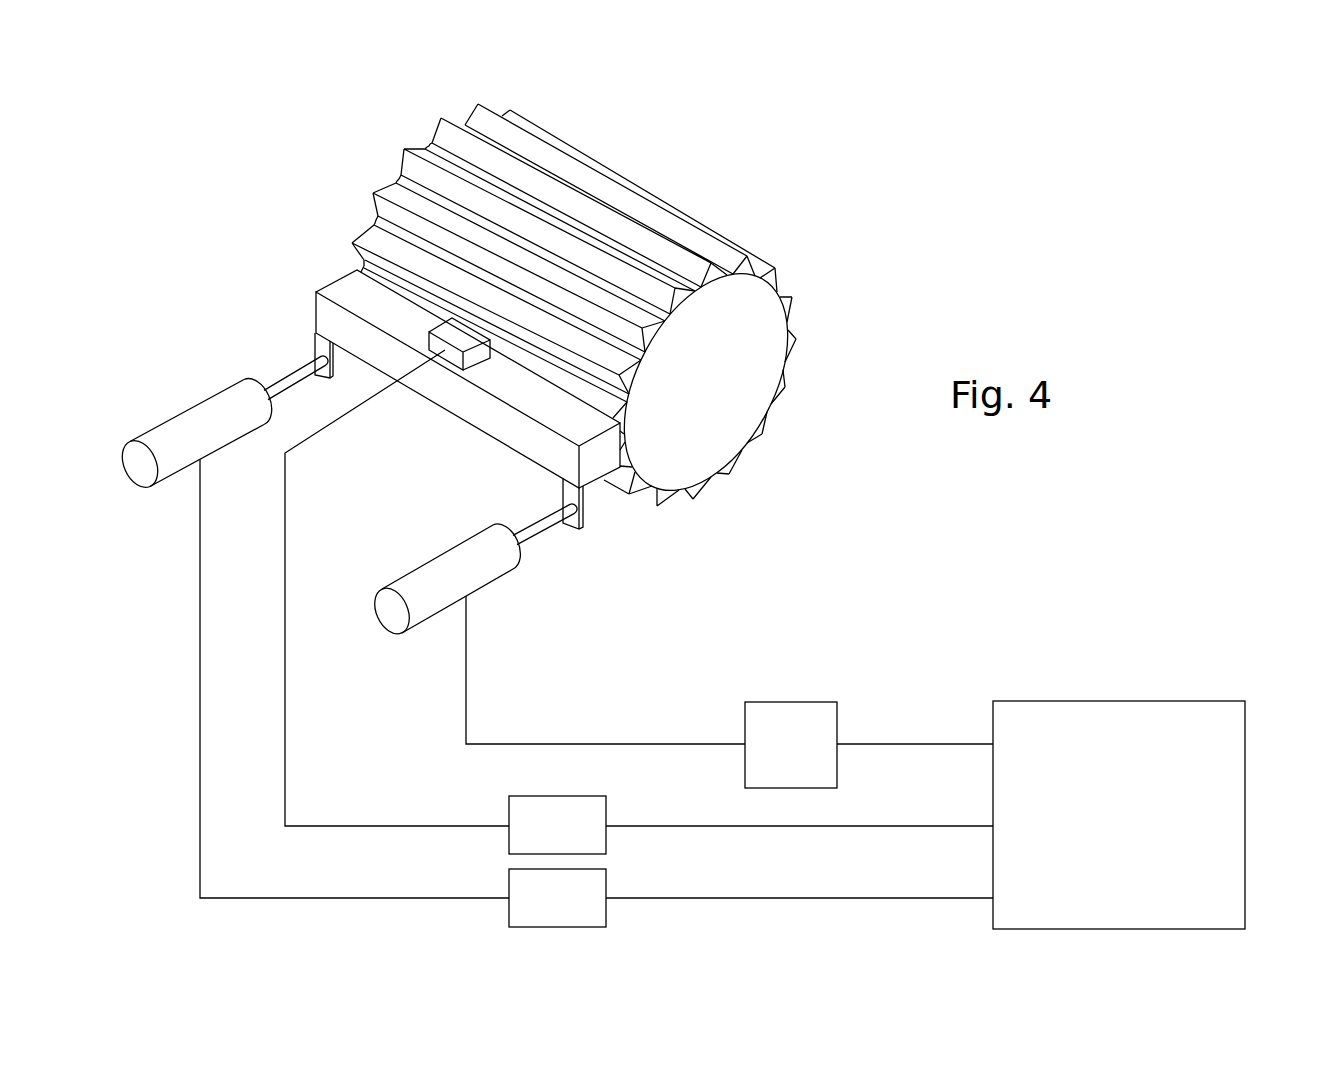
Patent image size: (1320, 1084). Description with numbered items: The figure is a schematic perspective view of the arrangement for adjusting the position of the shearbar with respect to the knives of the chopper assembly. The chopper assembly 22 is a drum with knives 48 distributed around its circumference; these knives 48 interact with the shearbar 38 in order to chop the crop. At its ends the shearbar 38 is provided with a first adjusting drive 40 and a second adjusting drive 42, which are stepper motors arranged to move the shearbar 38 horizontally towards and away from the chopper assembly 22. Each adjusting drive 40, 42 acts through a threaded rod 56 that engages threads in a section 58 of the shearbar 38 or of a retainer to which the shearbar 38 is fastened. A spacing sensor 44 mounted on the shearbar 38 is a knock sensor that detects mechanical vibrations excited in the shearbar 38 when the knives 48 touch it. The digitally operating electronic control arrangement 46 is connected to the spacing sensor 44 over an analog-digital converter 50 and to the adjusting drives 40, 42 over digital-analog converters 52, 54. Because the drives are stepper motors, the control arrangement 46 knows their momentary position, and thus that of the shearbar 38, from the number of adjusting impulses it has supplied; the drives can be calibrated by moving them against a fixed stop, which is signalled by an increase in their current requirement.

The chopper assembly 22 is at (430, 148).
The shearbar 38 is at (348, 286).
The first adjusting drive 40 is at (150, 432).
The second adjusting drive 42 is at (372, 608).
The spacing sensor 44 is at (458, 357).
The electronic control arrangement 46 is at (1078, 700).
The knives 48 is at (722, 252).
The analog-digital converter 50 is at (557, 795).
The digital-analog converter 52 is at (837, 720).
The digital-analog converter 54 is at (606, 889).
The threaded rods 56 is at (273, 383).
The sections 58 is at (316, 346).